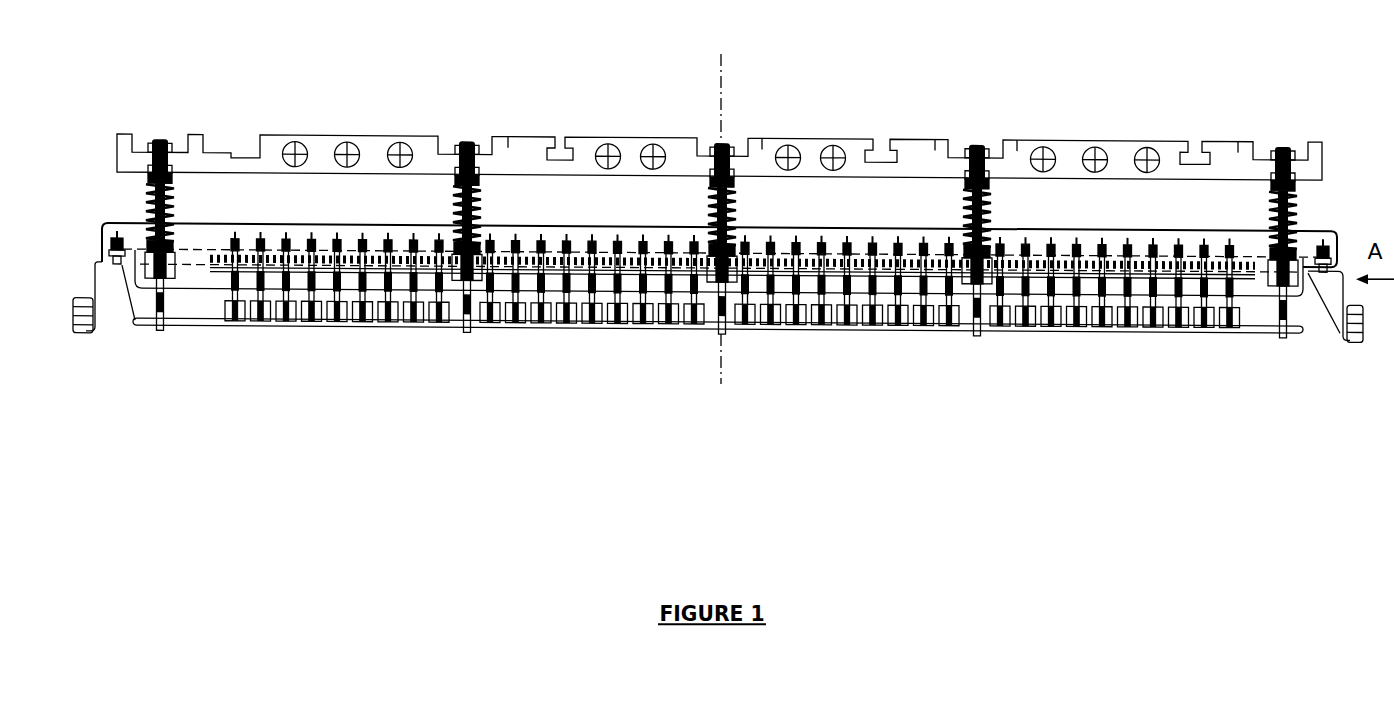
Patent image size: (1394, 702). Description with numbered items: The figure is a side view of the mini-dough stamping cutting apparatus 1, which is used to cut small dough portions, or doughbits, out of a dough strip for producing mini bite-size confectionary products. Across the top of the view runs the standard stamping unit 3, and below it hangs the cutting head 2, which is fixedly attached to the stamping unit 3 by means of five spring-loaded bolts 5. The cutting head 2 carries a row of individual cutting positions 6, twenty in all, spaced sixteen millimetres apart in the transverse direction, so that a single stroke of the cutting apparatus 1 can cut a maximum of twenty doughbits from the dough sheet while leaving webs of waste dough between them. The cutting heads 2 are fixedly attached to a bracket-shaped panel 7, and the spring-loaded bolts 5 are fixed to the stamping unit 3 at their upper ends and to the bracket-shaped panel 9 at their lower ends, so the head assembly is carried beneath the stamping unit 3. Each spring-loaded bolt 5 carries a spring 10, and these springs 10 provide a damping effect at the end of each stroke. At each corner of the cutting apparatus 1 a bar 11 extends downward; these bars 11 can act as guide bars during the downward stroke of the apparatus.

The cutting apparatus 1 is at (904, 195).
The cutting head 2 is at (1218, 307).
The stamping unit 3 is at (1317, 170).
The spring-loaded bolts 5 is at (161, 138).
The cutting positions 6 is at (220, 322).
The bracket-shaped panel 7 is at (1300, 295).
The bracket-shaped panel 9 is at (1327, 242).
The springs 10 is at (1292, 205).
The bars 11 is at (150, 315).